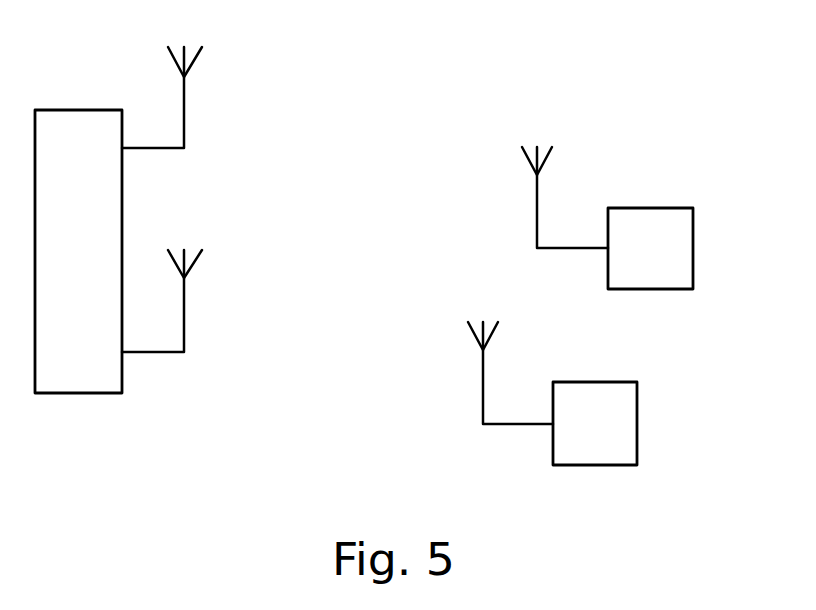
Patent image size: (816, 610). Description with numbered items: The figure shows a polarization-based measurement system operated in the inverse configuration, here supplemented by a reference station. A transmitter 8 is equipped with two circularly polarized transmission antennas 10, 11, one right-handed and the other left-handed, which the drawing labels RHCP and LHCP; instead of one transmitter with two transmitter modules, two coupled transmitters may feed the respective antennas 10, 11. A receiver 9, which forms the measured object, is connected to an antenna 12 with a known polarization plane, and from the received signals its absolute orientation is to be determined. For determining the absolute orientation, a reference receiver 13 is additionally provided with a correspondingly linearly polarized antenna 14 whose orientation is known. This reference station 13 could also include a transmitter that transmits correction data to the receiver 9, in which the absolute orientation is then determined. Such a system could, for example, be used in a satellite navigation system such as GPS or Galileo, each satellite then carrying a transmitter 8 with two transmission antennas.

The transmitter 8 is at (63, 359).
The receiver 9 is at (652, 228).
The circularly polarized antenna 10 is at (184, 127).
The circularly polarized antenna 11 is at (184, 325).
The antenna 12 is at (538, 210).
The reference receiver 13 is at (625, 400).
The linearly polarized antenna 14 is at (487, 398).